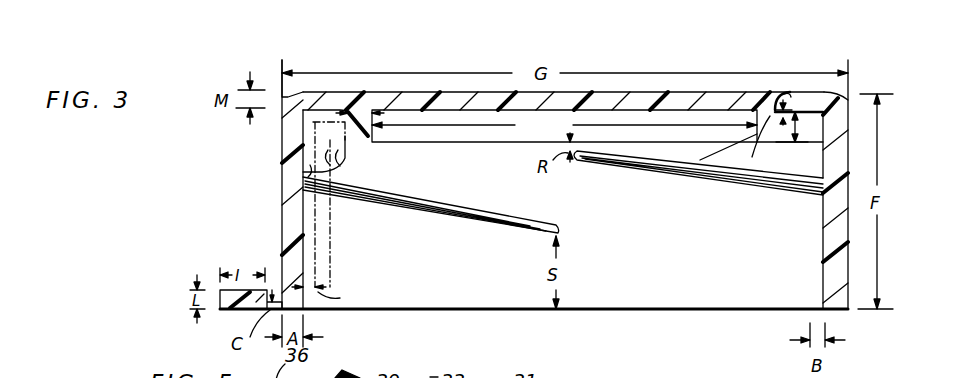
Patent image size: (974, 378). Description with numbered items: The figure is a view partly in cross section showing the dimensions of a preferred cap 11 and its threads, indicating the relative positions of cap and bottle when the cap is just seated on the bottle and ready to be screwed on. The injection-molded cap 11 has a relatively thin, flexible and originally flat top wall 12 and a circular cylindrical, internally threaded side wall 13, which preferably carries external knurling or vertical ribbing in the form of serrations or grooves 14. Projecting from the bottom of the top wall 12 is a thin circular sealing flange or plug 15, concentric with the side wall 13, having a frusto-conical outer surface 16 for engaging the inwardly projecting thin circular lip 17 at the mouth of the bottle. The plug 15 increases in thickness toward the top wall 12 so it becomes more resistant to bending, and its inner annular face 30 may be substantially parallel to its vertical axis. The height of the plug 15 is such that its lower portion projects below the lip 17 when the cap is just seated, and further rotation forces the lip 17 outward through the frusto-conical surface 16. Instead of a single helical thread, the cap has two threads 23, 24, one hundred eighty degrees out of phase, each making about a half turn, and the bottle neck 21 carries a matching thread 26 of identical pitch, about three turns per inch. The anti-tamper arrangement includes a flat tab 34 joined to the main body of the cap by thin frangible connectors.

The cap 11 is at (904, 145).
The top wall 12 is at (834, 96).
The side wall 13 is at (296, 210).
The grooves 14 is at (283, 176).
The sealing flange or plug 15 is at (563, 130).
The frusto-conical outer surface 16 is at (767, 116).
The lip 17 is at (322, 128).
The neck 21 is at (333, 248).
The thread 23 is at (427, 205).
The thread 24 is at (720, 174).
The thread 26 is at (333, 158).
The inner annular face 30 is at (700, 160).
The tab 34 is at (245, 300).